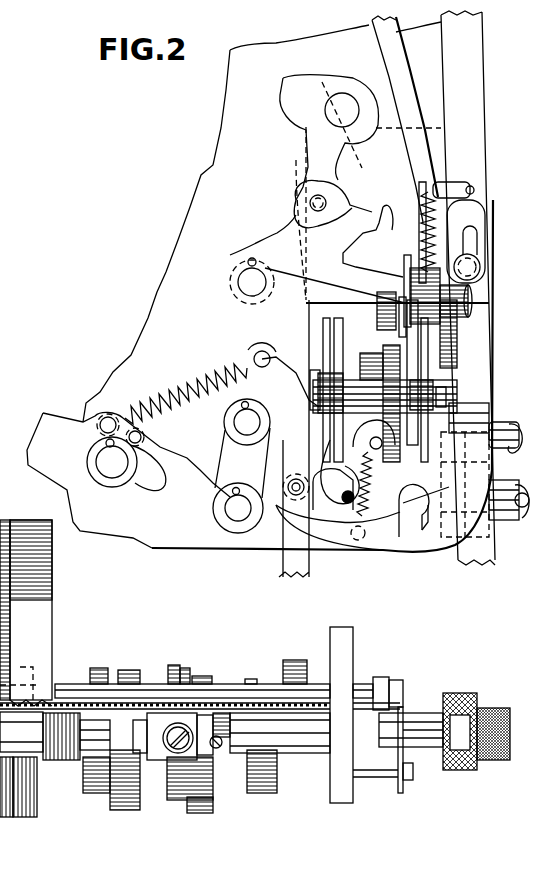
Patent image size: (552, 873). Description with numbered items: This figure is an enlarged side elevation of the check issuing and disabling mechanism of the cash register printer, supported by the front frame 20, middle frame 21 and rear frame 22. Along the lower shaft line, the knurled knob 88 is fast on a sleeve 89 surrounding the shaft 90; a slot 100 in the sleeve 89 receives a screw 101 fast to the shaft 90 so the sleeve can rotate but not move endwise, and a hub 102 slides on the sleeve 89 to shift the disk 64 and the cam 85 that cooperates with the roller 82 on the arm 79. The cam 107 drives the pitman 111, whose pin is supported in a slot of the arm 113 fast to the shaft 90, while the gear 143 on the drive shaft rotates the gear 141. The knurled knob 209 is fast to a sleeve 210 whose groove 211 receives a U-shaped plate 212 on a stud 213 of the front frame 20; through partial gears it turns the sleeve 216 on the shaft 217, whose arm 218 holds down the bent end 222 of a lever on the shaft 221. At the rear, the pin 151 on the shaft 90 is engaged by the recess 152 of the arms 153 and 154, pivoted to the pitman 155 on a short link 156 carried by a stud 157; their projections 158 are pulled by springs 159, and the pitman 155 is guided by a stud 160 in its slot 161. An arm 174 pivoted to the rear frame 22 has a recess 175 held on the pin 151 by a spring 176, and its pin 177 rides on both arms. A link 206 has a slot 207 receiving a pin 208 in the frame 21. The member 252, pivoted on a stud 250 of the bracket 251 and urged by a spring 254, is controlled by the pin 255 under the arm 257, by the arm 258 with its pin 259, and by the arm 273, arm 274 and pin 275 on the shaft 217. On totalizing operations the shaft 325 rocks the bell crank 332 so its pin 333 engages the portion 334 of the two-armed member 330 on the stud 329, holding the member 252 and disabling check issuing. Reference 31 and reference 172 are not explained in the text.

The front frame 20 is at (341, 657).
The middle frame 21 is at (470, 98).
The rear frame 22 is at (290, 317).
The shaft collar 31 is at (110, 647).
The disk 64 is at (137, 669).
The arm 79 is at (175, 668).
The anti-friction roller 82 is at (187, 670).
The cam 85 is at (207, 674).
The knurled knob 88 is at (481, 713).
The sleeve 89 is at (208, 747).
The shaft 90 is at (525, 490).
The slot 100 is at (220, 737).
The screw 101 is at (220, 742).
The hub 102 is at (153, 747).
The cam 107 is at (30, 800).
The pitman 111 is at (37, 787).
The arm 113 is at (63, 758).
The gear 141 is at (270, 757).
The gear 143 is at (252, 680).
The pin 151 is at (416, 500).
The recess 152 is at (428, 522).
The arm 153 is at (376, 537).
The arm 154 is at (463, 430).
The pitman 155 is at (203, 503).
The short link 156 is at (240, 457).
The stud 157 is at (248, 422).
The projection 158 is at (277, 348).
The spring 159 is at (197, 362).
The stud 160 is at (107, 460).
The slot 161 is at (157, 480).
The link 172 is at (446, 490).
The arm 174 is at (331, 497).
The recess 175 is at (430, 480).
The spring 176 is at (362, 447).
The pin 177 is at (366, 457).
The link 206 is at (391, 57).
The slot 207 is at (466, 240).
The pin 208 is at (472, 262).
The knurled knob 209 is at (456, 698).
The sleeve 210 is at (416, 717).
The groove 211 is at (401, 707).
The U-shaped plate 212 is at (403, 792).
The stud 213 is at (411, 778).
The sleeve 216 is at (306, 693).
The shaft 217 is at (509, 490).
The arm 218 is at (433, 407).
The shaft 221 is at (348, 390).
The bent end 222 is at (471, 410).
The stud 250 is at (462, 307).
The bracket 251 is at (33, 643).
The member 252 is at (410, 280).
The spring 254 is at (428, 247).
The pin 255 is at (283, 474).
The arm 257 is at (315, 367).
The arm 258 is at (429, 358).
The pin 259 is at (414, 326).
The arm 273 is at (383, 687).
The arm 274 is at (393, 385).
The pin 275 is at (403, 363).
The shaft 325 is at (330, 113).
The stud 329 is at (250, 277).
The two-armed member 330 is at (277, 240).
The bell crank 332 is at (333, 170).
The pin 333 is at (326, 198).
The portion 334 is at (368, 200).